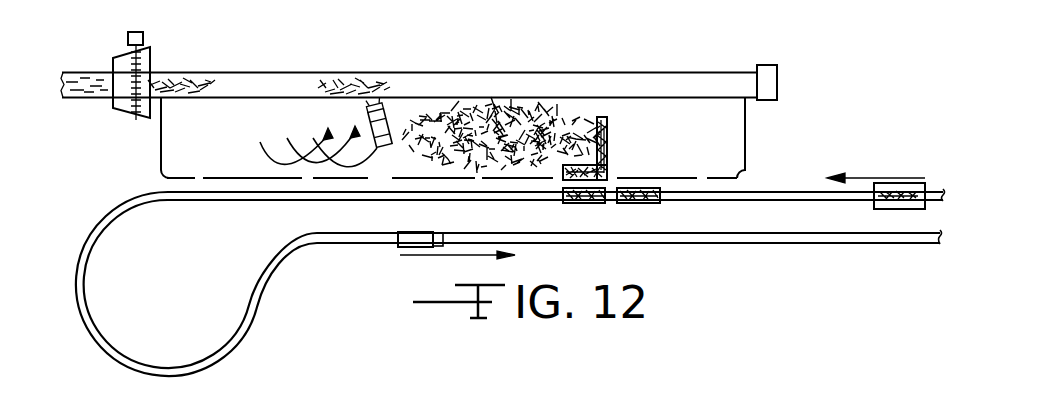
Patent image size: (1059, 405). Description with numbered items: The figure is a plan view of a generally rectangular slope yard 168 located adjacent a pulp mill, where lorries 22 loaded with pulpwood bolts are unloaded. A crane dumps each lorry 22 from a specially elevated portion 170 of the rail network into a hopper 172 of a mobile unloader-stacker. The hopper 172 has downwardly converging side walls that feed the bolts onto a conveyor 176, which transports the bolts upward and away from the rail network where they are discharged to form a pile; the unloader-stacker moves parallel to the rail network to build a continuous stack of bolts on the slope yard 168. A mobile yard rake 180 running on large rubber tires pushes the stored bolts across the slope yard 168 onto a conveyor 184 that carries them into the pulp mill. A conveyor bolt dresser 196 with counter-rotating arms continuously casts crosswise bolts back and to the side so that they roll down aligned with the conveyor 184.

The lorry 22 is at (928, 182).
The slope yard 168 is at (642, 97).
The elevated portion of the rail network 170 is at (562, 200).
The hopper 172 is at (607, 173).
The conveyor 176 is at (606, 127).
The mobile yard rake 180 is at (356, 92).
The conveyor 184 is at (500, 72).
The conveyor bolt dresser 196 is at (150, 62).